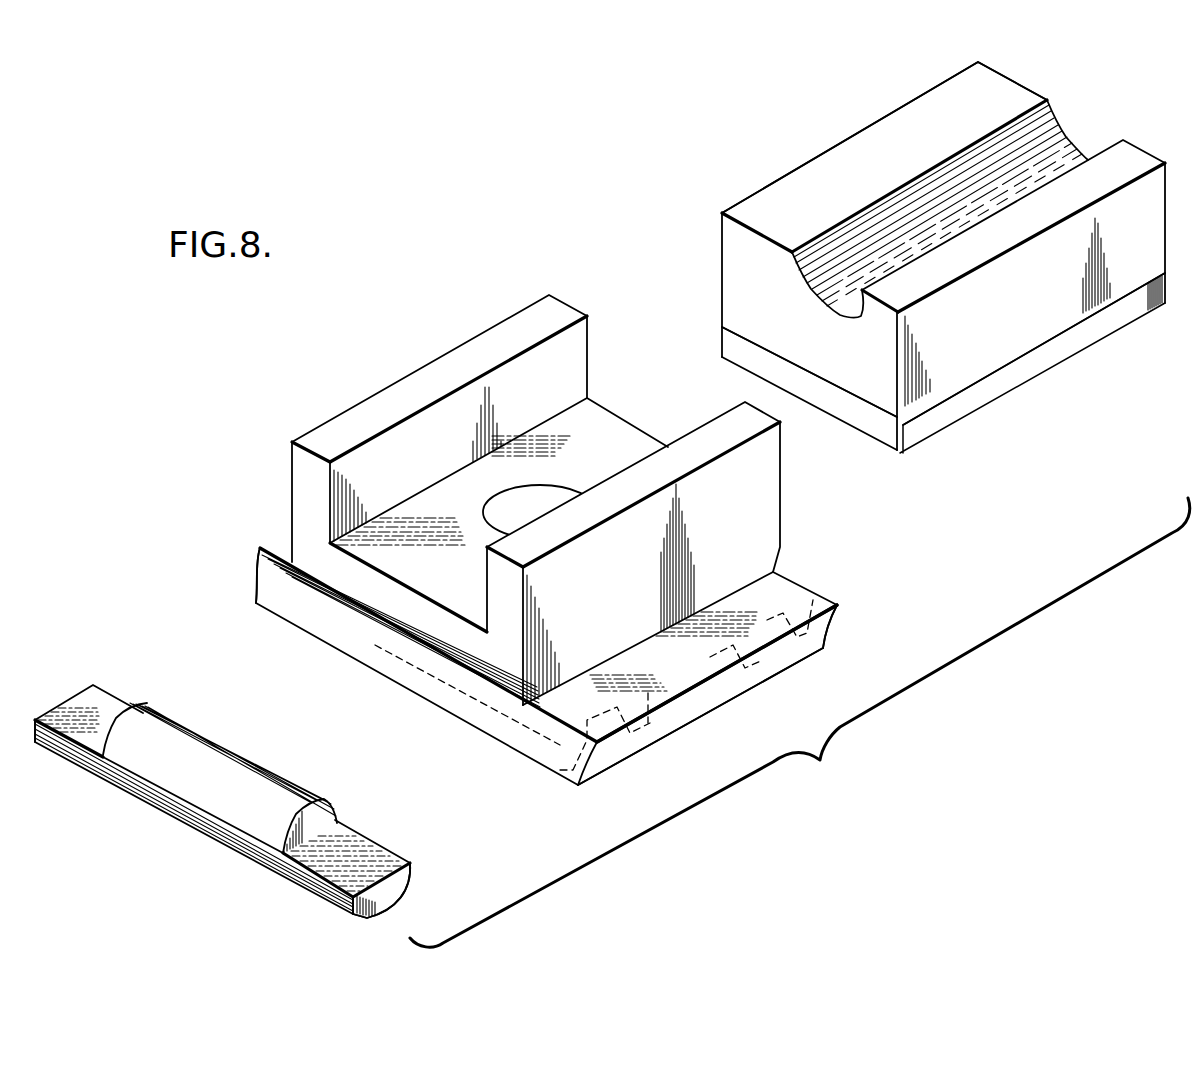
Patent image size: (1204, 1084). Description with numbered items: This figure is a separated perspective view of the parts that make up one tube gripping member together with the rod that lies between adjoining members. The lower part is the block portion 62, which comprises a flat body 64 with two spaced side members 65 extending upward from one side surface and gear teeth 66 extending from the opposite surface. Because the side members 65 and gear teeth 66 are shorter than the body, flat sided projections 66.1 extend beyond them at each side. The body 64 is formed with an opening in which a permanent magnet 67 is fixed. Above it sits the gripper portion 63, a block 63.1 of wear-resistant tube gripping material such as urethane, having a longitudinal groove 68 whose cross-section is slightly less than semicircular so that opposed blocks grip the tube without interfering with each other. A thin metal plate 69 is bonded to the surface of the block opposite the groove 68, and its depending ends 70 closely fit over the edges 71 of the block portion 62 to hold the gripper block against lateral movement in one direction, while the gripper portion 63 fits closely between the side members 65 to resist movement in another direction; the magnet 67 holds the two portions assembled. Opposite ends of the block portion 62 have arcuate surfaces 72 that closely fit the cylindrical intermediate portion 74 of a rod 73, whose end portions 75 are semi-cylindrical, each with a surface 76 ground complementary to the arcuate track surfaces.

The block portion 62 is at (438, 347).
The gripper portion 63 is at (838, 142).
The block 63.1 is at (752, 195).
The flat body 64 is at (806, 579).
The side members 65 is at (362, 403).
The gear teeth 66 is at (640, 742).
The flat sided projections 66.1 is at (262, 548).
The permanent magnet 67 is at (551, 490).
The longitudinal groove 68 is at (1049, 146).
The thin metal plate 69 is at (1001, 366).
The depending ends 70 is at (1155, 305).
The edges 71 is at (635, 430).
The arcuate surface 72 is at (827, 630).
The rod 73 is at (197, 830).
The intermediate portion 74 is at (210, 757).
The end portions 75 is at (113, 693).
The surface 76 is at (80, 727).